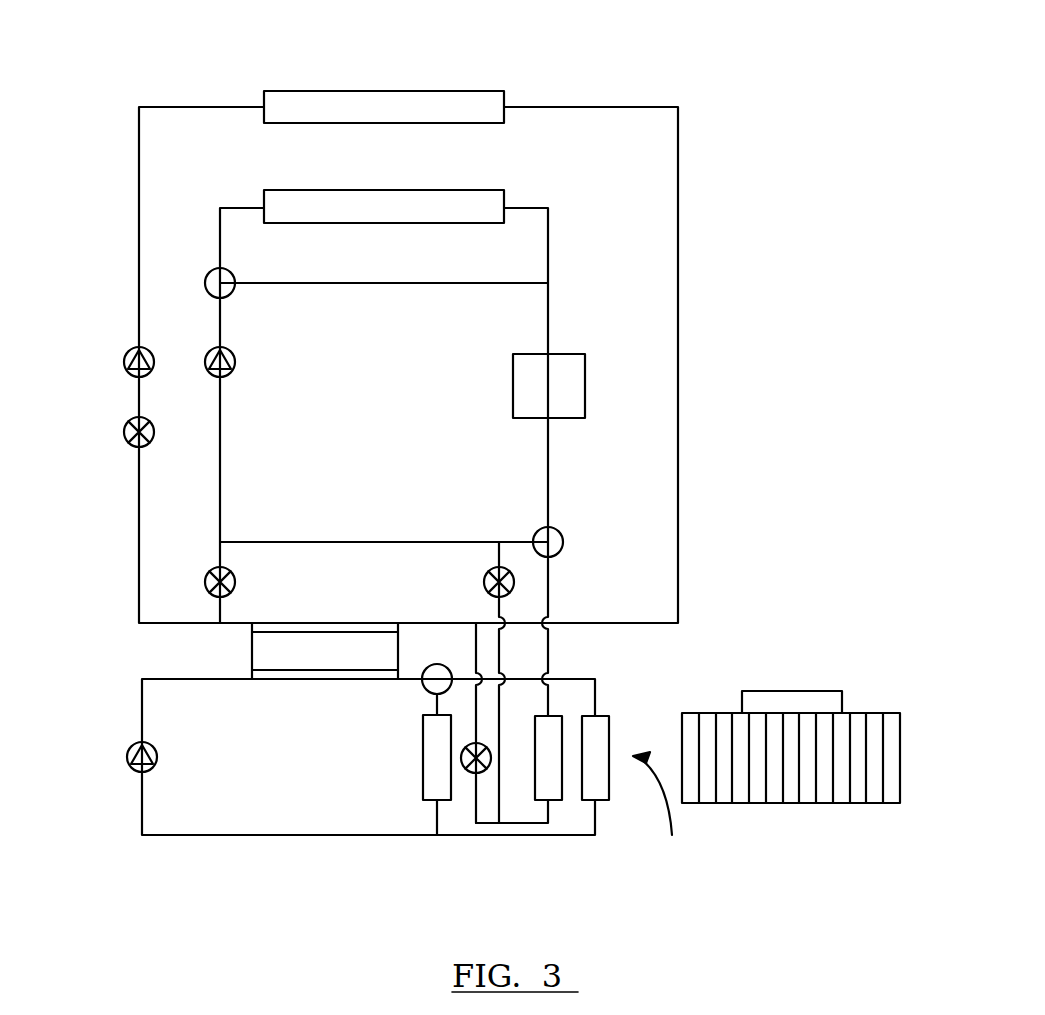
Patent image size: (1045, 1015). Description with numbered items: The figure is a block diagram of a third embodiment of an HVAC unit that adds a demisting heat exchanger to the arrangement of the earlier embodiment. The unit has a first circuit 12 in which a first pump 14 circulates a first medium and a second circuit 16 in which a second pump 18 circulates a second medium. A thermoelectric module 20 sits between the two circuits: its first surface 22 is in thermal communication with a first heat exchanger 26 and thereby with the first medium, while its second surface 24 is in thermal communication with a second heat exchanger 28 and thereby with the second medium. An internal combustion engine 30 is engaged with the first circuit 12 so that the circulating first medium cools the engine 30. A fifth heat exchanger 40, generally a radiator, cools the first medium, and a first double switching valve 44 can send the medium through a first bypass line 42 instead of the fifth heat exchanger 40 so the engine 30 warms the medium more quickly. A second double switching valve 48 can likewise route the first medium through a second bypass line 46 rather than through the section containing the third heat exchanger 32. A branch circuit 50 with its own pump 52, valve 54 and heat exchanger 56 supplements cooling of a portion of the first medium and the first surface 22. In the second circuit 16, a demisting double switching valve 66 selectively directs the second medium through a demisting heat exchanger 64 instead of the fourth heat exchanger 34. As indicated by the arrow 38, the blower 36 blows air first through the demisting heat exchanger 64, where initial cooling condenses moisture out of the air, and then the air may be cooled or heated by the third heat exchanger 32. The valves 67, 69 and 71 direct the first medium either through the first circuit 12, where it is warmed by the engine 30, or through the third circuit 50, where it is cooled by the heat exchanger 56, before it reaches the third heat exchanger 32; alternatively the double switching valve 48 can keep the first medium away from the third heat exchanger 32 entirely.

The first circuit 12 is at (225, 455).
The first pump 14 is at (233, 358).
The second circuit 16 is at (142, 800).
The second pump 18 is at (128, 760).
The thermoelectric module 20 is at (252, 655).
The first surface 22 is at (358, 630).
The second surface 24 is at (360, 677).
The first heat exchanger 26 is at (295, 628).
The second heat exchanger 28 is at (310, 677).
The internal combustion engine 30 is at (585, 380).
The third heat exchanger 32 is at (532, 783).
The fourth heat exchanger 34 is at (423, 782).
The blower 36 is at (845, 700).
The arrow 38 is at (662, 813).
The fifth heat exchanger 40 is at (430, 190).
The first bypass line 42 is at (405, 285).
The first double switching valve 44 is at (212, 275).
The second bypass line 46 is at (347, 540).
The second double switching valve 48 is at (560, 537).
The branch circuit 50 is at (139, 300).
The pump 52 is at (125, 364).
The valve 54 is at (125, 440).
The heat exchanger 56 is at (355, 90).
The demisting heat exchanger 64 is at (609, 745).
The demisting double switching valve 66 is at (425, 690).
The valve 67 is at (205, 580).
The valve 69 is at (513, 585).
The valve 71 is at (477, 772).